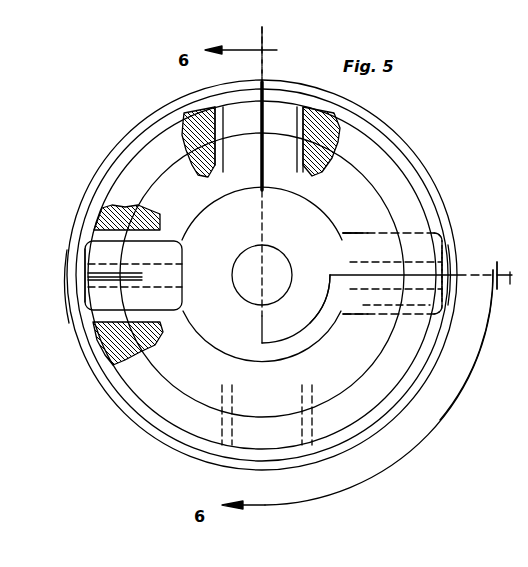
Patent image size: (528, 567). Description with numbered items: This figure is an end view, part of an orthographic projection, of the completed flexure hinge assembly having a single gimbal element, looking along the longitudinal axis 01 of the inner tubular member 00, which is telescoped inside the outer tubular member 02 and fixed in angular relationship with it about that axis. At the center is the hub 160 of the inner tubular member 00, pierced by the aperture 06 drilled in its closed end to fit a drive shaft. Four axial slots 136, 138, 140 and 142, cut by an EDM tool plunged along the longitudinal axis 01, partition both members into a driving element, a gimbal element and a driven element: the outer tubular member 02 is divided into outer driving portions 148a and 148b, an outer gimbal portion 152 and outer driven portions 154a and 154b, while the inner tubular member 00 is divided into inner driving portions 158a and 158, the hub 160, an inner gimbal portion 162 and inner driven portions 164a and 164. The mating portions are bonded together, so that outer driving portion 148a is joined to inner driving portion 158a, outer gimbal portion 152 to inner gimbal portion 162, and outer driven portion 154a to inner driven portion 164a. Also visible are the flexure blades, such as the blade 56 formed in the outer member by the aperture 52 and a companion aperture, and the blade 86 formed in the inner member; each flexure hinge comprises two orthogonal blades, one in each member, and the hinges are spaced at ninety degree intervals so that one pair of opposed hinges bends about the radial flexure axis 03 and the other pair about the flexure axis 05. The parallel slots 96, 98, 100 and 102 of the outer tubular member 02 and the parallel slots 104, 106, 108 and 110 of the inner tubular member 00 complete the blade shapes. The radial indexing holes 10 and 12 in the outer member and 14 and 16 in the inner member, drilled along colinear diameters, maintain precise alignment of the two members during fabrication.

The flexure axis 05 is at (262, 43).
The flexure blade 56 is at (263, 100).
The flexure blade 86 is at (282, 155).
The outer driving portion 148a is at (240, 120).
The outer tubular member 02 is at (187, 137).
The inner tubular member 00 is at (192, 170).
The inner driven portion 164 is at (332, 150).
The parallel slot 104 is at (376, 232).
The parallel slot 96 is at (440, 243).
The outer driven portion 154b is at (427, 253).
The axial slot 138 is at (450, 256).
The inner gimbal portion 162 is at (520, 115).
The flexure axis 03 is at (512, 287).
The outer gimbal portion 152 is at (396, 387).
The aperture 52 is at (34, 315).
The outer driven portion 154a is at (96, 247).
The radial indexing hole 10 is at (97, 257).
The radial indexing hole 16 is at (97, 283).
The inner driving portion 158 is at (142, 253).
The axial slot 136 is at (83, 305).
The axial slot 140 is at (210, 195).
The hub 160 is at (300, 226).
The inner driving portion 158a is at (357, 263).
The longitudinal axis 01 is at (256, 278).
The aperture 06 is at (281, 289).
The axial slot 142 is at (203, 357).
The parallel slot 110 is at (223, 392).
The inner driven portion 164a is at (258, 402).
The parallel slot 102 is at (232, 440).
The outer driving portion 148b is at (258, 435).
The parallel slot 100 is at (310, 428).
The parallel slot 108 is at (310, 390).
The parallel slot 106 is at (391, 280).
The radial indexing hole 14 is at (414, 316).
The parallel slot 98 is at (421, 318).
The radial indexing hole 12 is at (428, 277).